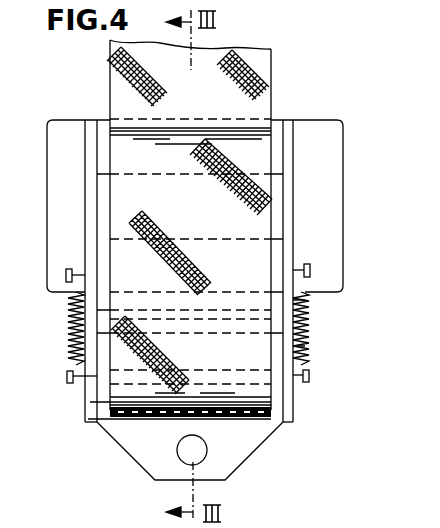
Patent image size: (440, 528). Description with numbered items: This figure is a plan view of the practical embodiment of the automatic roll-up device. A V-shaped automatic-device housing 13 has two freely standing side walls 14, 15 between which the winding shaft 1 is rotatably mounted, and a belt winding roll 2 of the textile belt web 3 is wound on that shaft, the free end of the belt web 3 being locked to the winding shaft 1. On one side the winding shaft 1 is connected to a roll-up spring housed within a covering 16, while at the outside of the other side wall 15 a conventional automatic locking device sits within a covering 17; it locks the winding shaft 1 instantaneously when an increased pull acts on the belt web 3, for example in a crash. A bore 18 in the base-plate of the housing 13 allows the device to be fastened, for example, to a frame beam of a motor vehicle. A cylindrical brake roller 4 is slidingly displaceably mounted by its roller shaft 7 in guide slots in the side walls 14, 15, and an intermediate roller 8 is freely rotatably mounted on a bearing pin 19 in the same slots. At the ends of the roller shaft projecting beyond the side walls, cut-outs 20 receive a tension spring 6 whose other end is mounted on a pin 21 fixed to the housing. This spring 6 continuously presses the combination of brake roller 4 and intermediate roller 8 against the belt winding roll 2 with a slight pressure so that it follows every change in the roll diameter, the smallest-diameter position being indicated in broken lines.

The winding shaft 1 is at (278, 198).
The belt winding roll 2 is at (122, 190).
The belt web 3 is at (262, 80).
The brake roller 4 is at (74, 350).
The tension spring 6 is at (70, 318).
The roller shaft 7 is at (67, 385).
The intermediate roller 8 is at (303, 306).
The automatic-device housing 13 is at (100, 448).
The side wall 14 is at (90, 412).
The side wall 15 is at (291, 413).
The covering 16 is at (52, 163).
The covering 17 is at (316, 120).
The bore 18 is at (182, 453).
The bearing pin 19 is at (305, 326).
The cut-outs 20 is at (300, 387).
The pin 21 is at (66, 271).